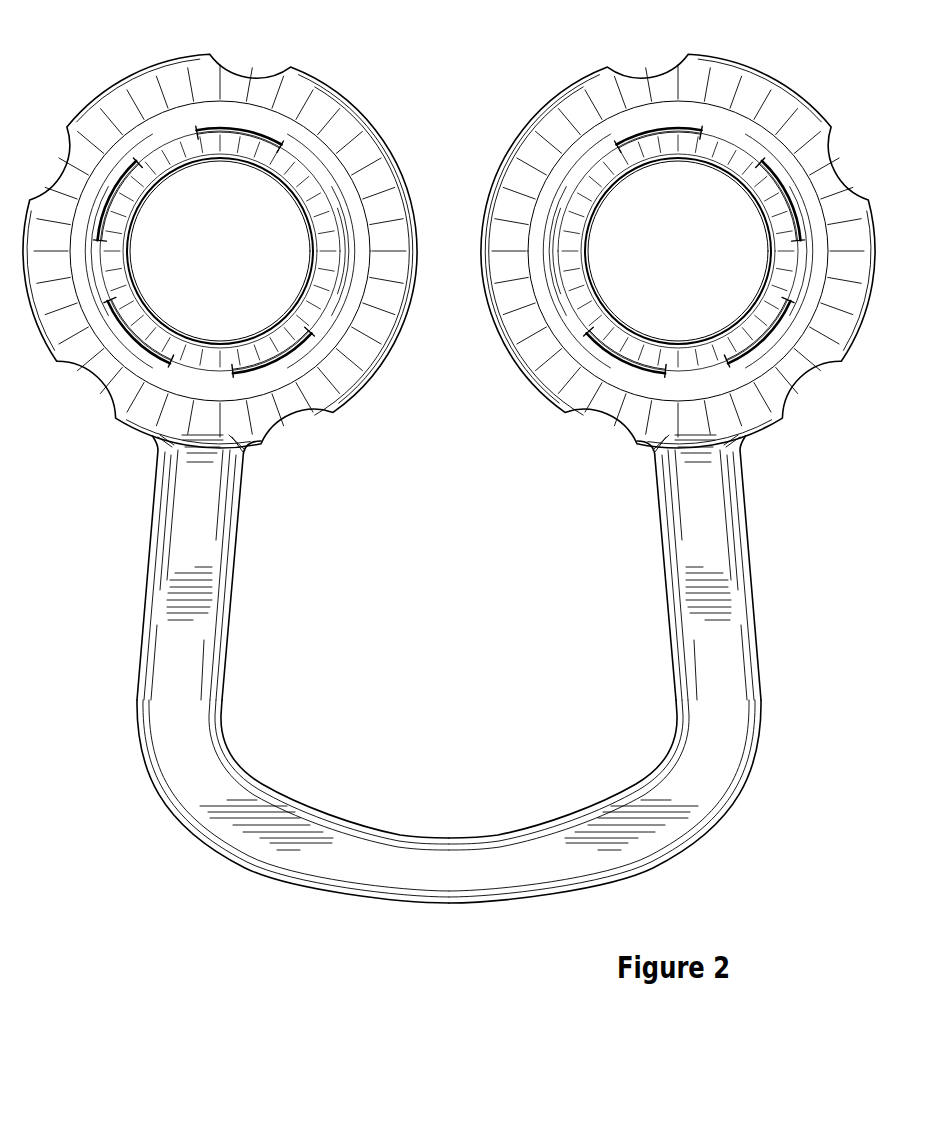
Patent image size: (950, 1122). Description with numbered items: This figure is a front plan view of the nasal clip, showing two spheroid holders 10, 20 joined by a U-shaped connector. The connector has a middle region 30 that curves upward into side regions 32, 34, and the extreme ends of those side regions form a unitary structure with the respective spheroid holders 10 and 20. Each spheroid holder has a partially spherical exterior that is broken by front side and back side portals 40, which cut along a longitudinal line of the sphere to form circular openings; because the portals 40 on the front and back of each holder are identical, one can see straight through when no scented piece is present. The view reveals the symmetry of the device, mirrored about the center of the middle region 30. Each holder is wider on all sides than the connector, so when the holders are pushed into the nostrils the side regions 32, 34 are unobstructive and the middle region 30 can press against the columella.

The spheroid holder 10 is at (360, 373).
The spheroid holder 20 is at (552, 377).
The middle region 30 is at (482, 855).
The side region 32 is at (215, 563).
The side region 34 is at (683, 563).
The front side and back side portals 40 is at (647, 213).